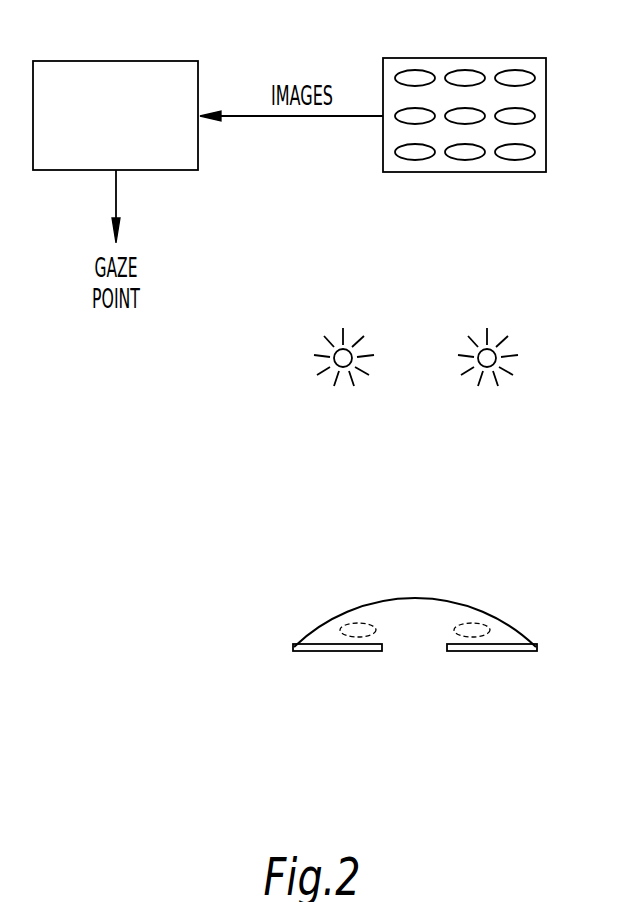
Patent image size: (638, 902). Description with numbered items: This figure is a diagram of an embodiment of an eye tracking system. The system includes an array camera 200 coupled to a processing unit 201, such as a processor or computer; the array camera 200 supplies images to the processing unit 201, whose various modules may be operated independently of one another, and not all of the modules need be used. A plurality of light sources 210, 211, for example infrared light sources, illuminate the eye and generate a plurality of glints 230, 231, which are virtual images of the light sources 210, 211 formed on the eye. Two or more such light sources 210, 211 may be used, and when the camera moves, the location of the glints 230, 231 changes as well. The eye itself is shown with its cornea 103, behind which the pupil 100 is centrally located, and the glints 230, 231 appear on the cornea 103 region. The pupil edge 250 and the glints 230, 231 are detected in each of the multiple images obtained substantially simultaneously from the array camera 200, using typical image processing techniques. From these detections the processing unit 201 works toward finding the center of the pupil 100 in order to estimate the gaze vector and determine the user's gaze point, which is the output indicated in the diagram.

The pupil 100 is at (427, 652).
The cornea 103 is at (516, 631).
The array camera 200 is at (465, 58).
The processing unit 201 is at (117, 60).
The light source 210 is at (343, 360).
The light source 211 is at (487, 360).
The glint 230 is at (358, 629).
The glint 231 is at (471, 629).
The pupil edge 250 is at (383, 652).